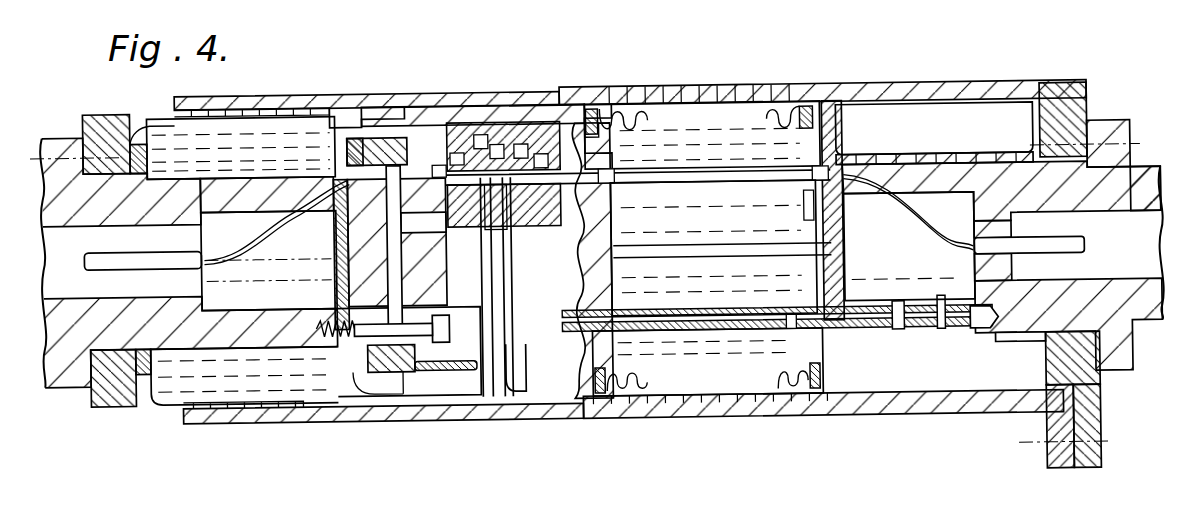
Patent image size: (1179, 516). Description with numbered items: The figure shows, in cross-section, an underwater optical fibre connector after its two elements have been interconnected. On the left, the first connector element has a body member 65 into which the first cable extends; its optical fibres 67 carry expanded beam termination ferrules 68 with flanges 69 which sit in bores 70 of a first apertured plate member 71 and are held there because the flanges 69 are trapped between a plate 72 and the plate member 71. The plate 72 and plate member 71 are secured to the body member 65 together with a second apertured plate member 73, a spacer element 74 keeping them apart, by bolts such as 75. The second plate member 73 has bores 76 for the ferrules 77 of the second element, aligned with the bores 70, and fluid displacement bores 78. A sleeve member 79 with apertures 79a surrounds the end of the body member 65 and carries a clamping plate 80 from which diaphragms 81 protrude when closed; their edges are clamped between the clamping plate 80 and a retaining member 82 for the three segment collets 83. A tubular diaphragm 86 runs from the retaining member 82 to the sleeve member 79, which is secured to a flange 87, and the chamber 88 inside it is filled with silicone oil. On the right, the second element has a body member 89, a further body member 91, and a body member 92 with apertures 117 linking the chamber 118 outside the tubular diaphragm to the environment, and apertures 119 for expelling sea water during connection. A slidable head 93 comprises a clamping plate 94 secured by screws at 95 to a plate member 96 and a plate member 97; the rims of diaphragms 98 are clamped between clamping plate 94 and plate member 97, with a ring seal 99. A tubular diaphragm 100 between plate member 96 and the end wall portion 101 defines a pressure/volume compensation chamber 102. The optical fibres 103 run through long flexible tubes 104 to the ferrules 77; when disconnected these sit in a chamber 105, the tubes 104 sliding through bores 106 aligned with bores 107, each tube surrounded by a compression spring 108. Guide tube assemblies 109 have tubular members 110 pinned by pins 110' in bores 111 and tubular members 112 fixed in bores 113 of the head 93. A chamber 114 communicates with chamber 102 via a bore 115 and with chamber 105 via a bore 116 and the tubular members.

The body member 65 is at (50, 340).
The optical fibres 67 is at (258, 263).
The expanded beam termination ferrules 68 is at (370, 146).
The flanges 69 is at (340, 182).
The bores 70 is at (333, 277).
The first apertured plate member 71 is at (370, 377).
The plate 72 is at (342, 338).
The second apertured plate member 73 is at (438, 172).
The spacer element 74 is at (383, 336).
The bolts 75 is at (437, 347).
The bores 76 is at (413, 177).
The ferrules 77 is at (456, 158).
The fluid displacement bores 78 is at (492, 291).
The sleeve member 79 is at (125, 388).
The apertures 79a is at (290, 411).
The clamping plate 80 is at (497, 151).
The diaphragms 81 is at (484, 236).
The retaining member 82 is at (481, 143).
The three segment collets 83 is at (521, 151).
The tubular diaphragm 86 is at (258, 127).
The flange 87 is at (75, 376).
The chamber 88 is at (152, 137).
The body member 89 is at (1138, 190).
The further body member 91 is at (1040, 132).
The body member 92 is at (898, 93).
The slidable head 93 is at (522, 200).
The clamping plate 94 is at (541, 161).
The screws 95 is at (440, 182).
The plate member 96 is at (603, 158).
The plate member 97 is at (592, 136).
The diaphragms 98 is at (497, 397).
The ring seal 99 is at (606, 186).
The tubular diaphragm 100 is at (803, 112).
The end wall portion 101 is at (825, 108).
The pressure/volume compensation chamber 102 is at (706, 128).
The optical fibres 103 is at (930, 229).
The long flexible tubes 104 is at (700, 186).
The chamber 105 is at (662, 124).
The bores 106 is at (613, 252).
The bores 107 is at (536, 246).
The compression spring 108 is at (830, 176).
The guide tube assemblies 109 is at (792, 350).
The tubular members 110 is at (777, 383).
The pins 110' is at (929, 340).
The bores 111 is at (975, 340).
The tubular members 112 is at (598, 397).
The bores 113 is at (565, 337).
The chamber 114 is at (908, 278).
The bore 115 is at (810, 216).
The bore 116 is at (895, 331).
The apertures 117 is at (650, 397).
The chamber 118 is at (700, 395).
The apertures 119 is at (260, 412).